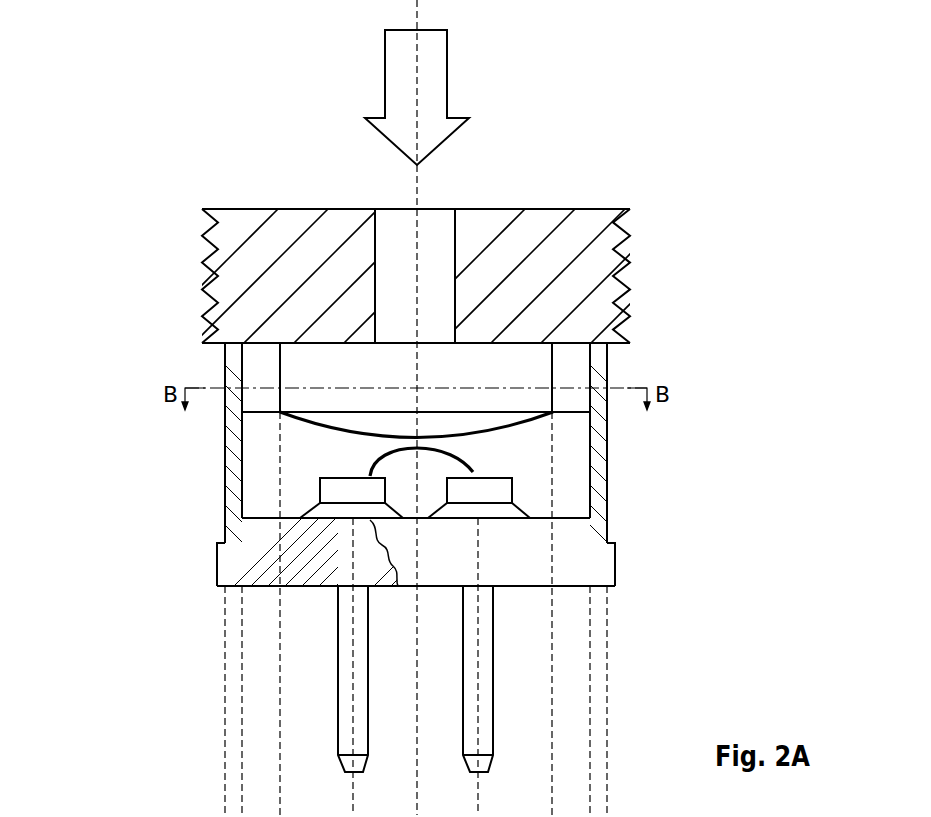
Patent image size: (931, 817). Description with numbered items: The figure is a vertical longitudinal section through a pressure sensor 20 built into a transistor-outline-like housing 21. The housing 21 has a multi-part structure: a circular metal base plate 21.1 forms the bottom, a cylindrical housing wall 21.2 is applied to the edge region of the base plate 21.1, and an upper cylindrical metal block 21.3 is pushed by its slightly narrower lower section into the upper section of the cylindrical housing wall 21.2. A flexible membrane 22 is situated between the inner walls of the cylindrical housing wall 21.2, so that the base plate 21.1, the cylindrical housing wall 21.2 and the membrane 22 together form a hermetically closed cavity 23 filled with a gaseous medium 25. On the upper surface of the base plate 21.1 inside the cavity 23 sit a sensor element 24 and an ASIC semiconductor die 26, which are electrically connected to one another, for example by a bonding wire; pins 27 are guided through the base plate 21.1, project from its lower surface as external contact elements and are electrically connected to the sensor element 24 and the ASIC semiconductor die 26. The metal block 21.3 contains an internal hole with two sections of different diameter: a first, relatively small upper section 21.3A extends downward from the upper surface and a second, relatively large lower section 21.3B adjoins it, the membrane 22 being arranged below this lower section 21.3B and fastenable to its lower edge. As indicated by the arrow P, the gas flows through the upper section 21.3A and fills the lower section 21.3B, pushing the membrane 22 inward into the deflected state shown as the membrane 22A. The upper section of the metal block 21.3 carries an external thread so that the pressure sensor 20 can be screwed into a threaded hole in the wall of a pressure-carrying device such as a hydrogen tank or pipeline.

The pressure sensor 20 is at (262, 120).
The housing 21 is at (497, 347).
The base plate 21.1 is at (567, 560).
The cylindrical housing wall 21.2 is at (222, 525).
The upper cylindrical metal block 21.3 is at (597, 253).
The upper section of internal hole 21.3A is at (430, 213).
The lower section of internal hole 21.3B is at (300, 363).
The flexible membrane 22 is at (545, 425).
The membrane in pushed-in state 22A is at (545, 418).
The cavity 23 is at (262, 458).
The sensor element 24 is at (503, 488).
The gaseous medium 25 is at (573, 503).
The ASIC semiconductor die 26 is at (330, 490).
The pins 27 is at (483, 725).
The arrow indicating gas flow P is at (445, 68).